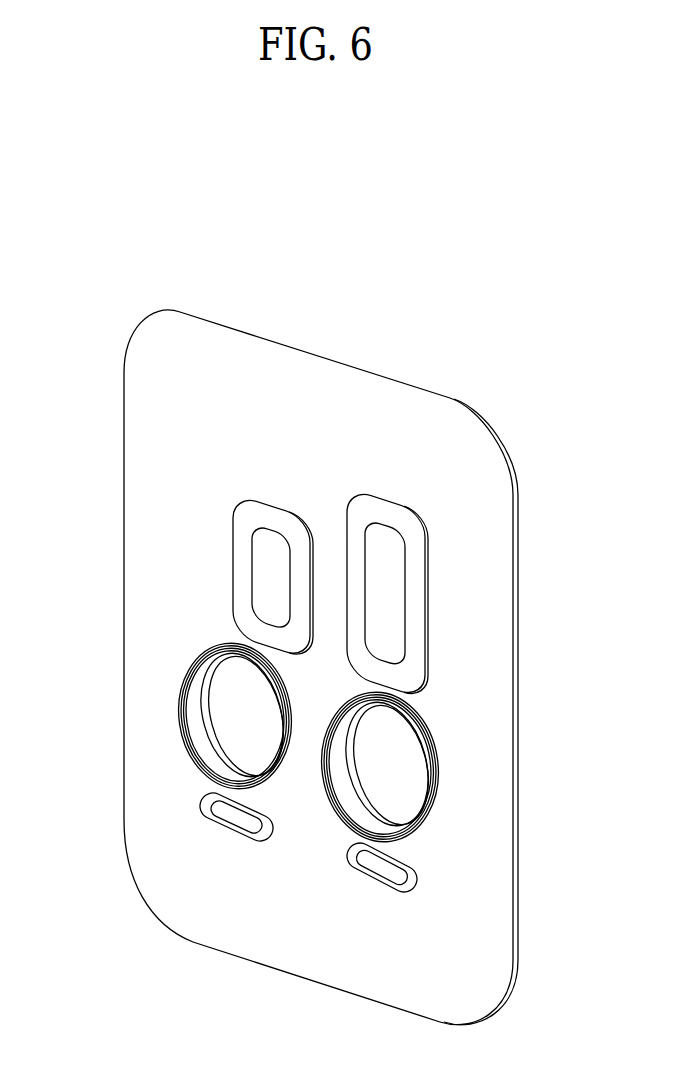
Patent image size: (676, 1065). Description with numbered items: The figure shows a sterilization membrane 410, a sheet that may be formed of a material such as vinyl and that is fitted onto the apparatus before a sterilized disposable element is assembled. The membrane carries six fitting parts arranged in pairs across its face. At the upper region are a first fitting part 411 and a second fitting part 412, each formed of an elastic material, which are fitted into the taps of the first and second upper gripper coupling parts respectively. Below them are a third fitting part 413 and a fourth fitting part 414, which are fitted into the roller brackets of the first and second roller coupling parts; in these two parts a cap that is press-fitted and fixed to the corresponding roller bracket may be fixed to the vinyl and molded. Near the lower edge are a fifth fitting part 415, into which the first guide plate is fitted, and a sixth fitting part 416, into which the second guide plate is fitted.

The sterilization membrane 410 is at (75, 270).
The first fitting part 411 is at (413, 607).
The second fitting part 412 is at (243, 567).
The third fitting part 413 is at (437, 766).
The fourth fitting part 414 is at (177, 702).
The fifth fitting part 415 is at (417, 865).
The sixth fitting part 416 is at (205, 809).